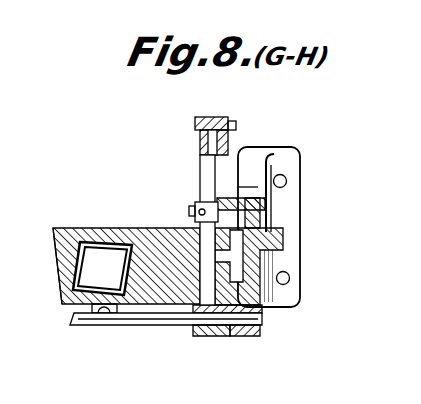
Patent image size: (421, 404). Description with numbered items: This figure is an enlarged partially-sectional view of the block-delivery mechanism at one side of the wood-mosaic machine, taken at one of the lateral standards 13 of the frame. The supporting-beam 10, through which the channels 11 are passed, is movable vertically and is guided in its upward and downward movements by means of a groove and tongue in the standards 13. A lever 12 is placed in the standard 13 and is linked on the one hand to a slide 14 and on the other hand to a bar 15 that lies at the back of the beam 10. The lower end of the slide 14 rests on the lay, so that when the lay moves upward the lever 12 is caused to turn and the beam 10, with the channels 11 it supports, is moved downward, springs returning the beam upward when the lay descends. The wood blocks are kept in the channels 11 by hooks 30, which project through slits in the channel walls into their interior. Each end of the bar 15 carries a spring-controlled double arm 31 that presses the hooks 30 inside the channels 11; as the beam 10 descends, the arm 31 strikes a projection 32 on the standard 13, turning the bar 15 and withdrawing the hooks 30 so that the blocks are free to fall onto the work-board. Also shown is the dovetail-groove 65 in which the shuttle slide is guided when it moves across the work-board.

The supporting-beam 10 is at (100, 248).
The channels 11 is at (60, 276).
The levers 12 is at (203, 174).
The standards 13 is at (250, 290).
The slides 14 is at (230, 150).
The bar 15 is at (78, 318).
The hooks 30 is at (112, 309).
The double arm 31 is at (242, 333).
The projections 32 is at (262, 308).
The dovetail-groove 65 is at (150, 213).